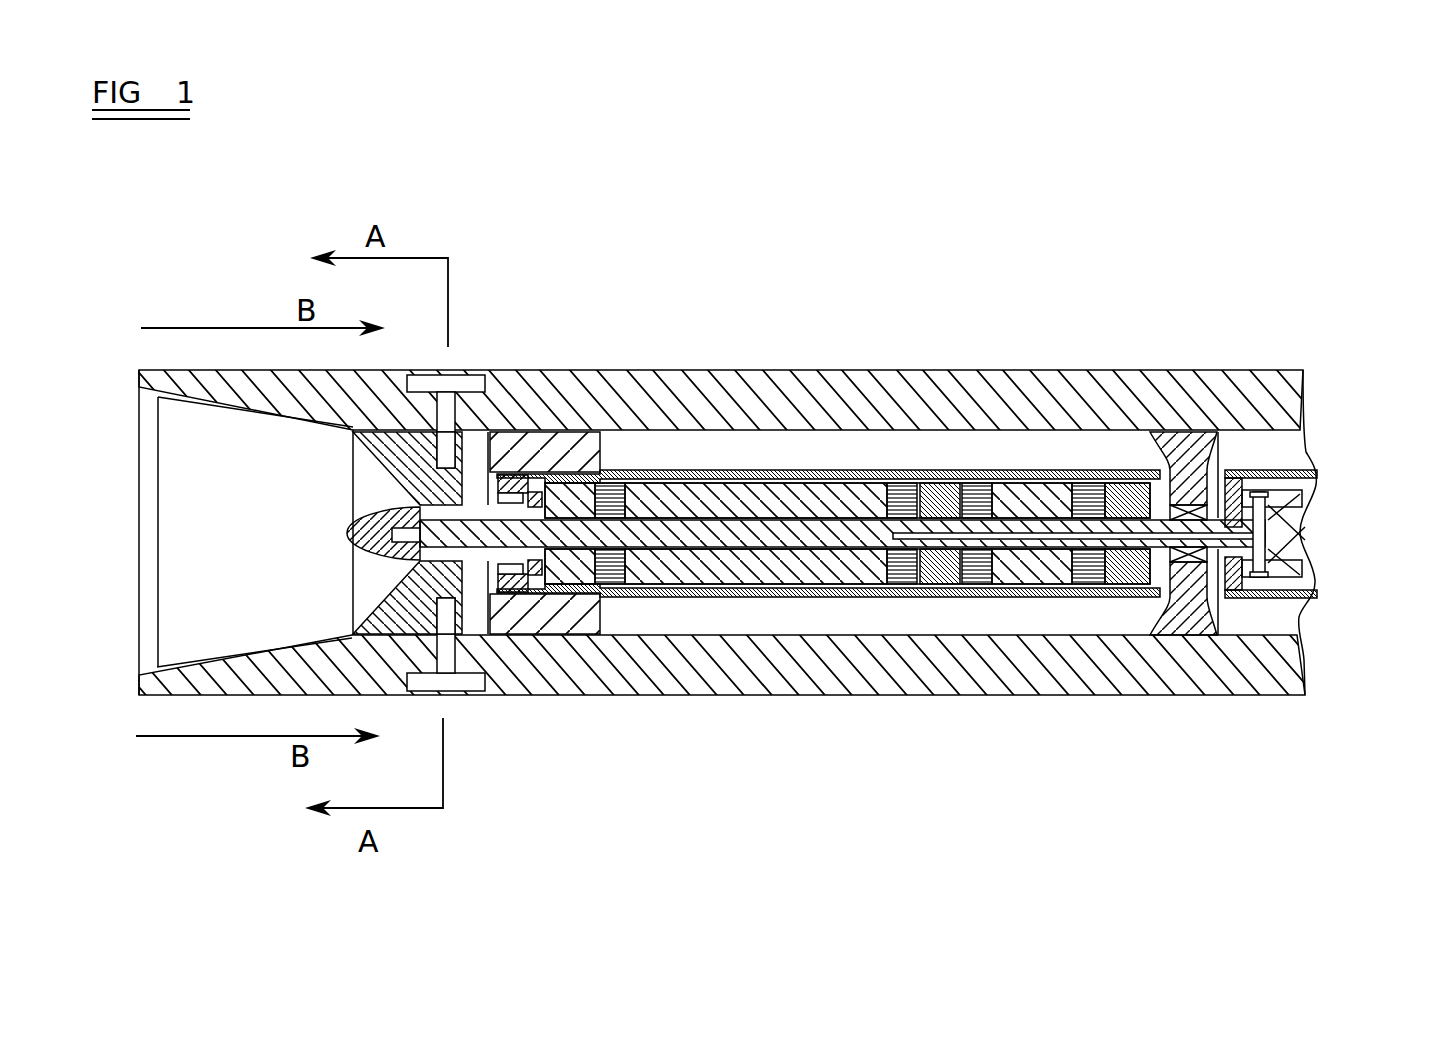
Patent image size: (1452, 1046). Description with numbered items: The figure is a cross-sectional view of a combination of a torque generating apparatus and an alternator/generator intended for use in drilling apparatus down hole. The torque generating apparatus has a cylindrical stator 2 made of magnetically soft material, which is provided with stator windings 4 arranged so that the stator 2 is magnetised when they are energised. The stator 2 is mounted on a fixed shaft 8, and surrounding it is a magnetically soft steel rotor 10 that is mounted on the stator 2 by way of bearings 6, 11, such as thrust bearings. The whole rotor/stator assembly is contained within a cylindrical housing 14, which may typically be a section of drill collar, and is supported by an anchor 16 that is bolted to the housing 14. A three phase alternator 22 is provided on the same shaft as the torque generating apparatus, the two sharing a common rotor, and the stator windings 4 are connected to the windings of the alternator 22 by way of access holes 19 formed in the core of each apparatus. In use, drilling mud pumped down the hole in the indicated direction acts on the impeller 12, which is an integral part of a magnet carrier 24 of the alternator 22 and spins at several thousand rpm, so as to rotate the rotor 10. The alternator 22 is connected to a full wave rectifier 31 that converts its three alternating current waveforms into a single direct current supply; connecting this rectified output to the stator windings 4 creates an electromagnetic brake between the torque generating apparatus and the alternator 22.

The stator 2 is at (1027, 503).
The stator windings 4 is at (1090, 598).
The bearing 6 is at (1140, 598).
The fixed shaft 8 is at (347, 535).
The rotor 10 is at (1017, 598).
The bearing 11 is at (518, 575).
The impeller 12 is at (568, 620).
The housing 14 is at (710, 660).
The anchor 16 is at (350, 623).
The access holes 19 is at (938, 533).
The alternator 22 is at (697, 412).
The magnet carrier 24 is at (757, 598).
The full wave rectifier 31 is at (1352, 516).